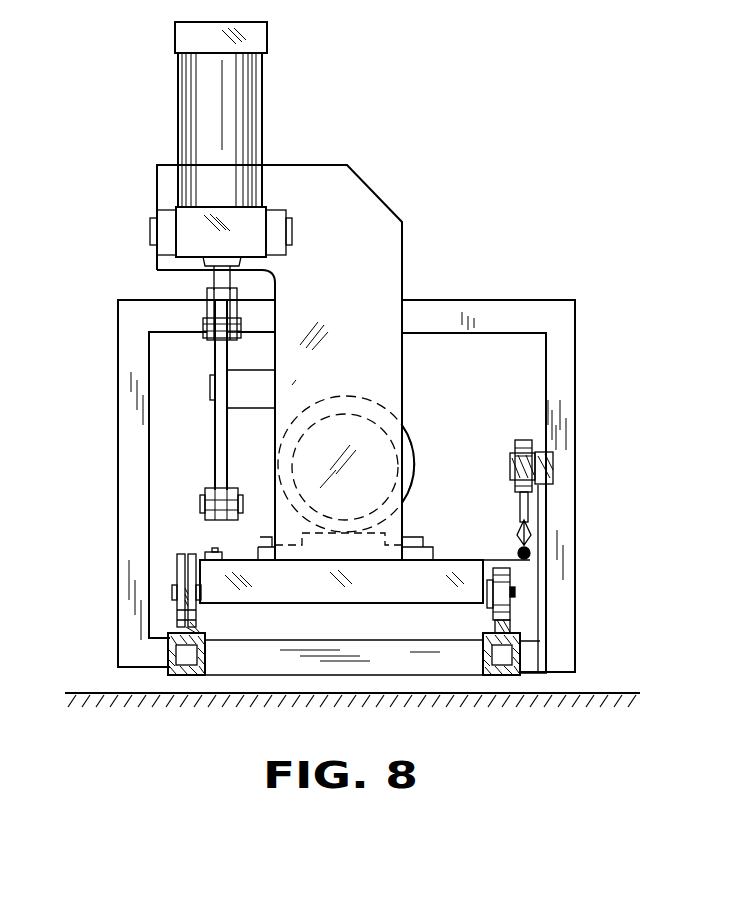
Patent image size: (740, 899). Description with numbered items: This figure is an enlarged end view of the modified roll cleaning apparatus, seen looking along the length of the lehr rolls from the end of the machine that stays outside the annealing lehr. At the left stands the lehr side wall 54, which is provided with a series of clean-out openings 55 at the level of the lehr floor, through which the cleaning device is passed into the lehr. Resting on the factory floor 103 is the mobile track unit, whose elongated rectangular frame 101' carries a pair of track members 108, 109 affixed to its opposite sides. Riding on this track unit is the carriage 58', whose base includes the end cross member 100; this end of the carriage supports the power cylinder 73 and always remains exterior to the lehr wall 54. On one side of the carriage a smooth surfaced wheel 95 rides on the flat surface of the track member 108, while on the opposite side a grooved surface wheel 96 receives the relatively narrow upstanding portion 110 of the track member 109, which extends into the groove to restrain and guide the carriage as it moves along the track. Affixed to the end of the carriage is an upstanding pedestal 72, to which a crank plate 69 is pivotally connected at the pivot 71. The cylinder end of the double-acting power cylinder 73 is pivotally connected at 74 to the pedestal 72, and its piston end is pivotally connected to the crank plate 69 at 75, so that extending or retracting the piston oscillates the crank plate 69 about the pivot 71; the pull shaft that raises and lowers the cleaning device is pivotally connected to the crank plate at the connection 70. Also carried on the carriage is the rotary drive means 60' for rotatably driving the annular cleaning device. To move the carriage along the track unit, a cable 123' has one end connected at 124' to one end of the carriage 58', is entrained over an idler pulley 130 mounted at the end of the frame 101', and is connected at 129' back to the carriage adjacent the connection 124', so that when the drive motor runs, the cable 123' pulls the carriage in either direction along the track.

The side wall 54 is at (96, 418).
The clean-out openings 55 is at (545, 376).
The carriage 58' is at (341, 618).
The rotary drive means 60' is at (357, 455).
The crank plate 69 is at (215, 447).
The pivotal connection 70 is at (240, 502).
The pivot 71 is at (210, 392).
The pedestal 72 is at (393, 283).
The power cylinder 73 is at (247, 80).
The pivotal connection 74 is at (150, 223).
The pivotal connection 75 is at (200, 325).
The smooth surfaced wheels 95 is at (503, 580).
The grooved surface wheels 96 is at (177, 570).
The end cross member 100 is at (432, 598).
The frame 101' is at (394, 701).
The factory floor 103 is at (580, 692).
The track member 108 is at (510, 628).
The track member 109 is at (178, 628).
The upstanding portion 110 is at (196, 612).
The cable 123' is at (512, 447).
The cable connection 124' is at (485, 514).
The cable connection 129' is at (581, 532).
The idler pulley 130 is at (512, 460).